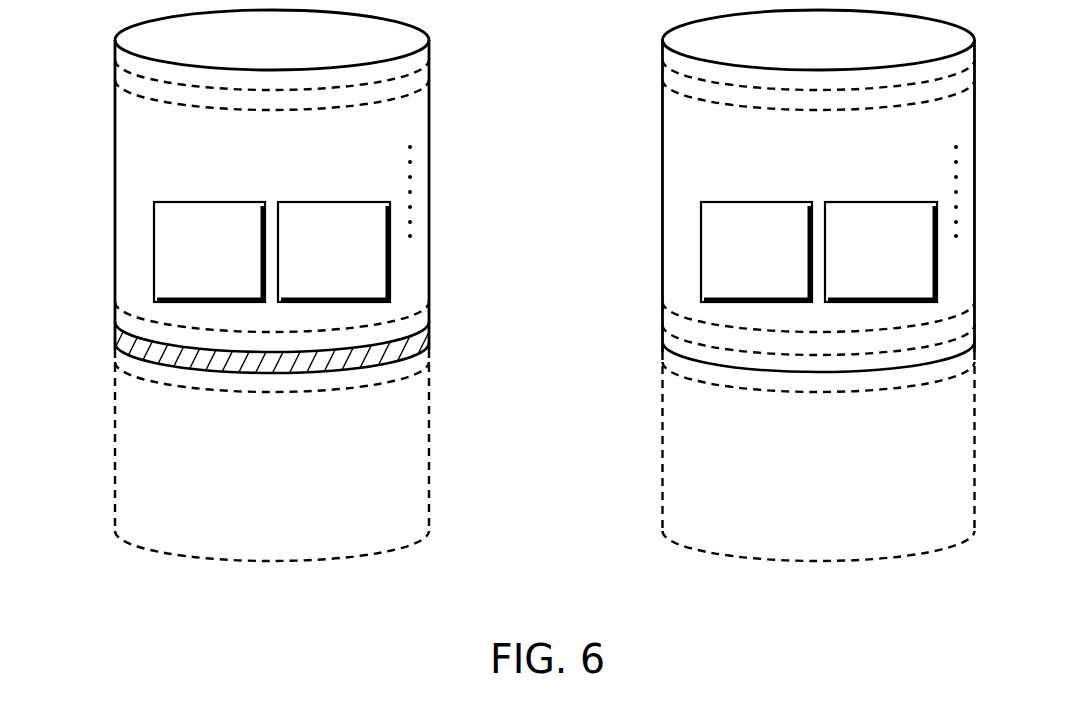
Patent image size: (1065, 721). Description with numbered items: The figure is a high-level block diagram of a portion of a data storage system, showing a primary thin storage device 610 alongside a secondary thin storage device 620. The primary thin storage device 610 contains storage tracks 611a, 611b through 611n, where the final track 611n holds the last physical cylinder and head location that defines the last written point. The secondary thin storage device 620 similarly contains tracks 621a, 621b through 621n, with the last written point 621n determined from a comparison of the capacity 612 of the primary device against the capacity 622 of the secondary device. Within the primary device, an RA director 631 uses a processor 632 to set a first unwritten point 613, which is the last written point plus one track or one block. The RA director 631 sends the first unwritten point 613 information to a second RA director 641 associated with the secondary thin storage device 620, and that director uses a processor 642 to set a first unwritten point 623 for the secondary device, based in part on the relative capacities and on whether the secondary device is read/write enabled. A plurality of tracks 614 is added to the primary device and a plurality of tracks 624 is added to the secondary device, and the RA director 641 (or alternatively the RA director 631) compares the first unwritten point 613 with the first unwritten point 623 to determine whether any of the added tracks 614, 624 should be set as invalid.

The primary thin storage device 610 is at (299, 52).
The storage track 611a is at (410, 63).
The storage track 611b is at (412, 85).
The final track 611n is at (410, 345).
The capacity 612 is at (103, 40).
The first unwritten point 613 is at (412, 365).
The plurality of tracks 614 is at (103, 347).
The RA director 631 is at (232, 277).
The processor 632 is at (357, 277).
The secondary thin storage device 620 is at (846, 52).
The track 621a is at (956, 63).
The track 621b is at (958, 85).
The last written point 621n is at (956, 345).
The capacity 622 is at (652, 40).
The first unwritten point 623 is at (958, 365).
The plurality of tracks 624 is at (652, 347).
The RA director 641 is at (779, 277).
The processor 642 is at (904, 277).